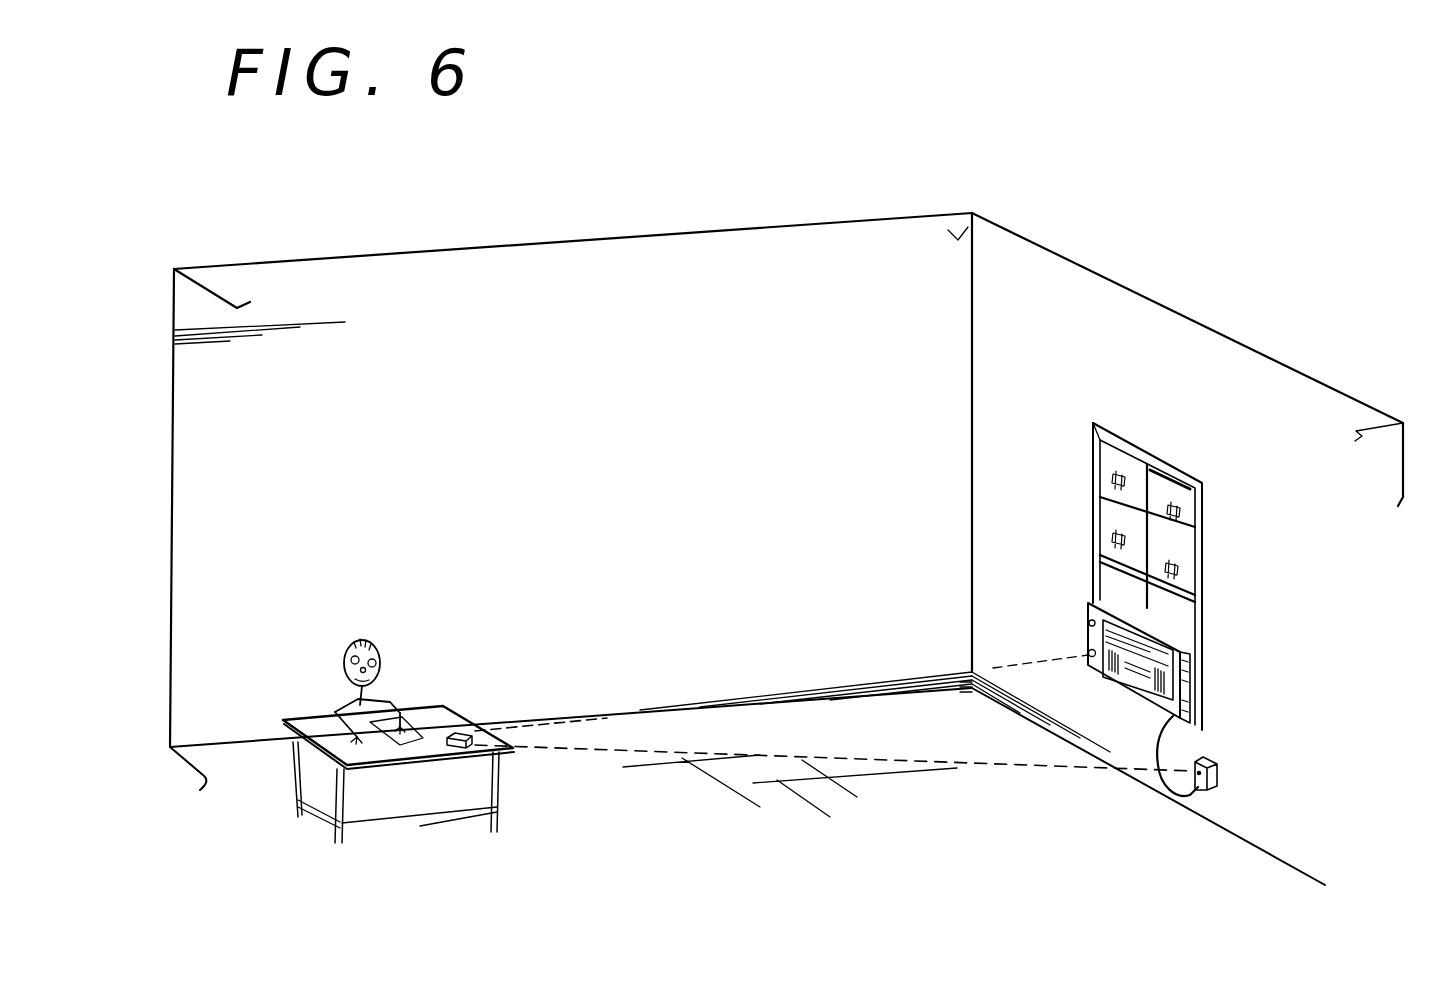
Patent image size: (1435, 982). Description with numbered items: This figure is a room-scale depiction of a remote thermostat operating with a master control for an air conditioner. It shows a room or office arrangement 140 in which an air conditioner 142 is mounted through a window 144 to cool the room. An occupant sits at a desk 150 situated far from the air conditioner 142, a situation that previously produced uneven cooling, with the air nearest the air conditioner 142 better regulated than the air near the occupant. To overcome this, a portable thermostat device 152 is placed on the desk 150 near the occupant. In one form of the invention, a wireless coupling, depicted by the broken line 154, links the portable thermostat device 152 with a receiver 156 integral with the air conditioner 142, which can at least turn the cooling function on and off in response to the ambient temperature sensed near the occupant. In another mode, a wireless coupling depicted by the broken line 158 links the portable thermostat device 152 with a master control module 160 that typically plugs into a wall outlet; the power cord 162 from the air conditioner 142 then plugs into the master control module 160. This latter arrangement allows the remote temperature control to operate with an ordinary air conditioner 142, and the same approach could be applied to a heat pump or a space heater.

The room or office arrangement 140 is at (782, 222).
The air conditioner 142 is at (1187, 682).
The window 144 is at (1207, 510).
The desk 150 is at (278, 722).
The portable thermostat device 152 is at (455, 731).
The wireless coupling (broken line) 154 is at (990, 665).
The receiver 156 is at (1081, 664).
The wireless coupling (broken line) 158 is at (1043, 769).
The master control module 160 is at (1221, 778).
The power cord 162 is at (1170, 743).